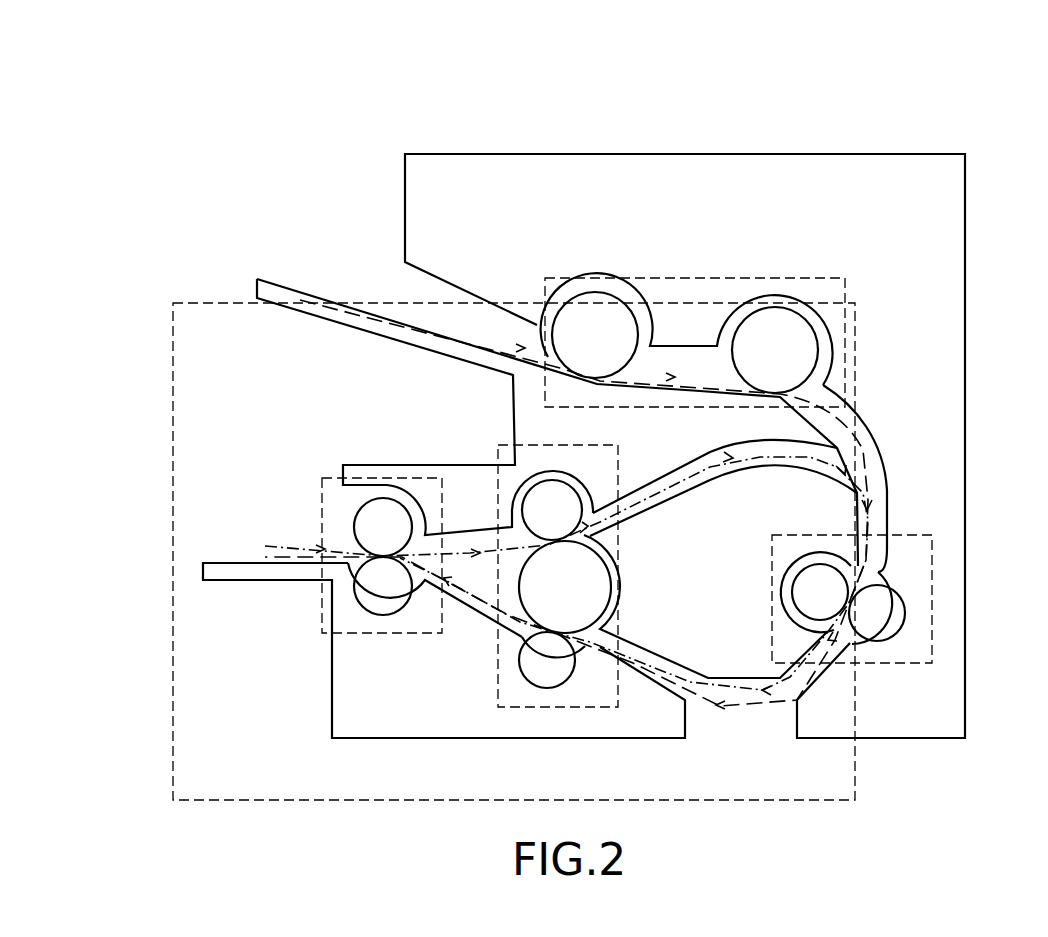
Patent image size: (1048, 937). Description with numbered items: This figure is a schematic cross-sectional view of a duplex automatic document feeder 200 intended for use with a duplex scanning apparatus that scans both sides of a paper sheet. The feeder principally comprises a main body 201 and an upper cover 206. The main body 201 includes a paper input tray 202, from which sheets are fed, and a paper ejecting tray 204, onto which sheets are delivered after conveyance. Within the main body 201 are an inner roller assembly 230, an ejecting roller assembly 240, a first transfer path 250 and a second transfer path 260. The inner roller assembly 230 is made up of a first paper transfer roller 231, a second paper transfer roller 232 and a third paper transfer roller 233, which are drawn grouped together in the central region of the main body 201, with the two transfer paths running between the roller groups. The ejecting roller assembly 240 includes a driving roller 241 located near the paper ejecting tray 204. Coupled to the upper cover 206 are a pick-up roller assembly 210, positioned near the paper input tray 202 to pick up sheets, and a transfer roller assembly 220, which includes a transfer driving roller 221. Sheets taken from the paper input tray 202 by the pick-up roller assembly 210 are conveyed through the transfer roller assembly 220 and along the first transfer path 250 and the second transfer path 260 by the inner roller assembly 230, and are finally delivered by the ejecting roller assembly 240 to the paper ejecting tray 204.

The image forming apparatus 200 is at (1036, 75).
The main body 201 is at (174, 438).
The paper input tray 202 is at (288, 292).
The paper ejecting tray 204 is at (267, 572).
The upper cover 206 is at (848, 152).
The pick-up roller assembly 210 is at (718, 277).
The transfer roller assembly 220 is at (933, 598).
The transfer driving roller 221 is at (878, 623).
The inner roller assembly 230 is at (600, 707).
The first paper transfer roller 231 is at (600, 582).
The second paper transfer roller 232 is at (540, 668).
The third paper transfer roller 233 is at (543, 503).
The ejecting roller assembly 240 is at (323, 540).
The driving roller 241 is at (377, 590).
The first transfer path 250 is at (745, 706).
The second transfer path 260 is at (503, 547).